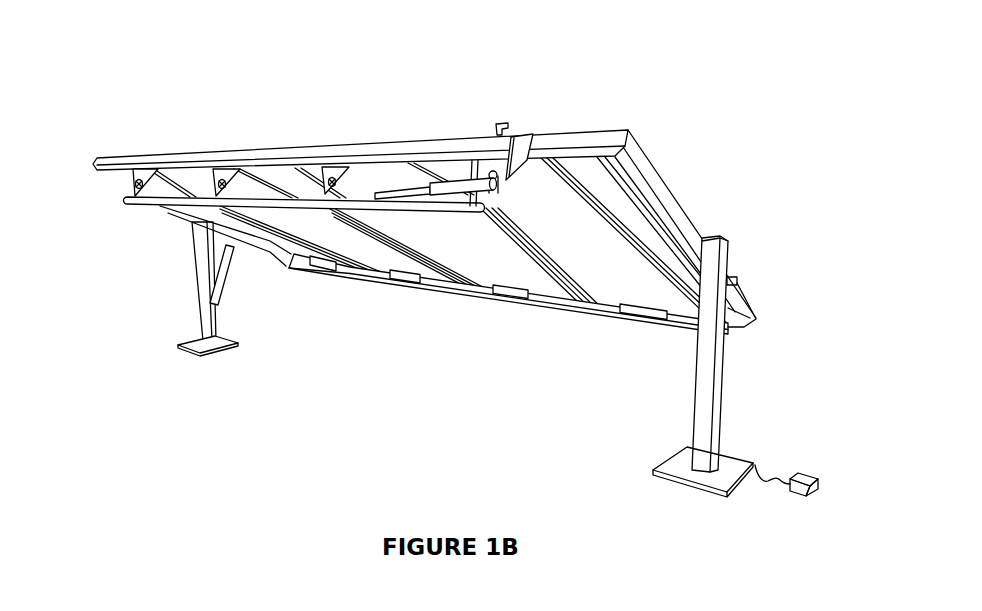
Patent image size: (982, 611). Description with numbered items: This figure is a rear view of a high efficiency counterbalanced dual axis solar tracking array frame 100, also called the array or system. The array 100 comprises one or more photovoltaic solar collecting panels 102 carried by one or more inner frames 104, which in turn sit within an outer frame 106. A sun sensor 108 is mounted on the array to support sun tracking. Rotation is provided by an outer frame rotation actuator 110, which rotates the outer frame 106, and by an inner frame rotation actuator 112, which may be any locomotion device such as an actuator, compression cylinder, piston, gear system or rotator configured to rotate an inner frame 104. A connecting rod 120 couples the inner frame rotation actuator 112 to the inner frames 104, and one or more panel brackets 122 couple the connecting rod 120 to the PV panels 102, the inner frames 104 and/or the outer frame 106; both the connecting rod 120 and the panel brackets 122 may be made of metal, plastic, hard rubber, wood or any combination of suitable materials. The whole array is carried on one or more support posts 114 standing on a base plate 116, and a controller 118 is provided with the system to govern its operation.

The high efficiency counterbalanced dual axis solar tracking array frame 100 is at (603, 77).
The photovoltaic solar collecting panel 102 is at (600, 262).
The inner frame 104 is at (478, 278).
The outer frame 106 is at (162, 153).
The sun sensor 108 is at (504, 120).
The outer frame rotation actuator 110 is at (228, 282).
The inner frame rotation actuator 112 is at (440, 188).
The support post 114 is at (718, 360).
The base plate 116 is at (739, 460).
The controller 118 is at (814, 471).
The connecting rod 120 is at (136, 208).
The panel bracket 122 is at (137, 171).